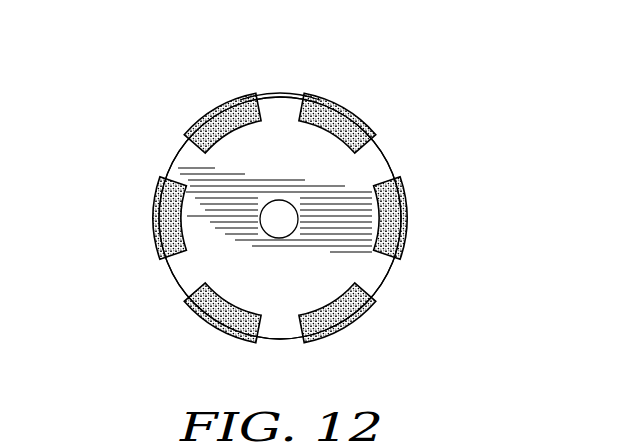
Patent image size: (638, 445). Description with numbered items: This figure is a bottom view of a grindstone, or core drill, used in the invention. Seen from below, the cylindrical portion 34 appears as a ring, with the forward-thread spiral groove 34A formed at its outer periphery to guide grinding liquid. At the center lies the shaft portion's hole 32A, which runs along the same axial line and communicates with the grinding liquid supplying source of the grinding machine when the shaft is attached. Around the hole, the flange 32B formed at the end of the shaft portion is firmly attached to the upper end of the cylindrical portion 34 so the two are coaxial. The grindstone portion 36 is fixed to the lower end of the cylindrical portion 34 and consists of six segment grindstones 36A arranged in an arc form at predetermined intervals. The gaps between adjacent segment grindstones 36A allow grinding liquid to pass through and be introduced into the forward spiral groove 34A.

The hole 32A is at (277, 239).
The flange 32B is at (187, 270).
The cylindrical portion 34 is at (392, 290).
The spiral groove 34A is at (281, 97).
The grindstone portion 36 is at (356, 103).
The segment grindstones 36A is at (279, 216).